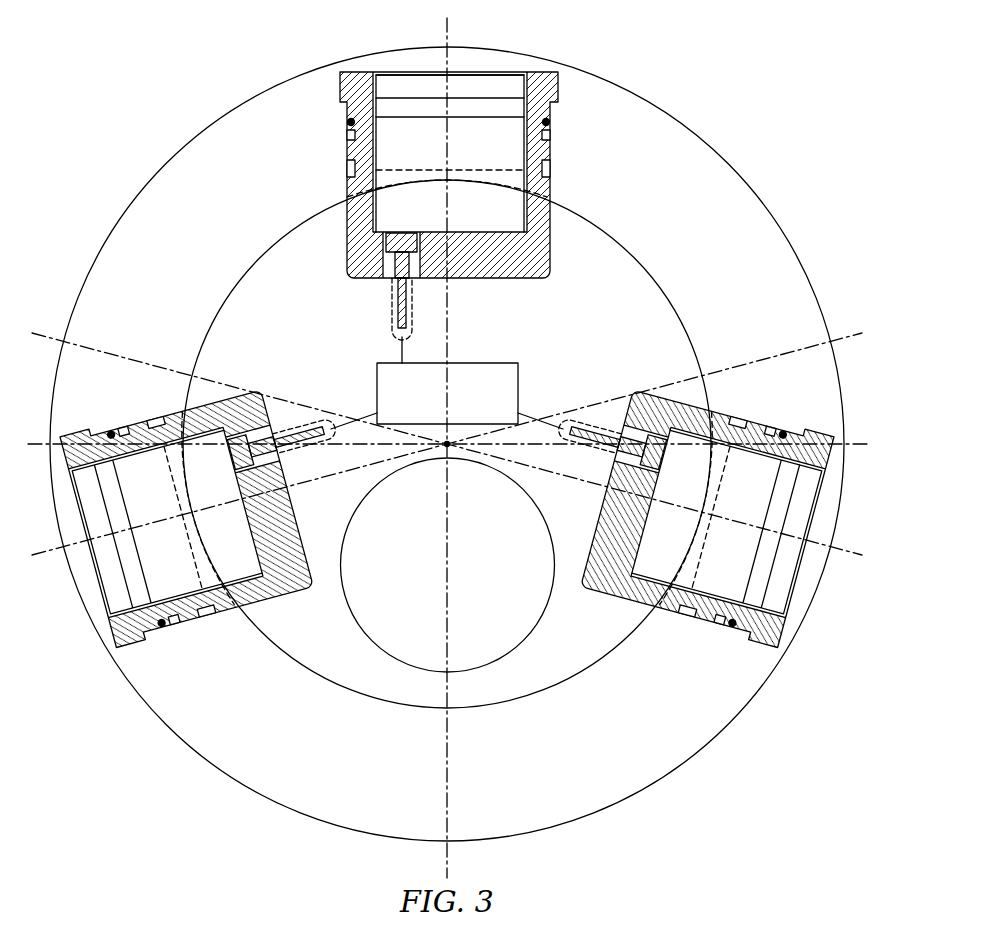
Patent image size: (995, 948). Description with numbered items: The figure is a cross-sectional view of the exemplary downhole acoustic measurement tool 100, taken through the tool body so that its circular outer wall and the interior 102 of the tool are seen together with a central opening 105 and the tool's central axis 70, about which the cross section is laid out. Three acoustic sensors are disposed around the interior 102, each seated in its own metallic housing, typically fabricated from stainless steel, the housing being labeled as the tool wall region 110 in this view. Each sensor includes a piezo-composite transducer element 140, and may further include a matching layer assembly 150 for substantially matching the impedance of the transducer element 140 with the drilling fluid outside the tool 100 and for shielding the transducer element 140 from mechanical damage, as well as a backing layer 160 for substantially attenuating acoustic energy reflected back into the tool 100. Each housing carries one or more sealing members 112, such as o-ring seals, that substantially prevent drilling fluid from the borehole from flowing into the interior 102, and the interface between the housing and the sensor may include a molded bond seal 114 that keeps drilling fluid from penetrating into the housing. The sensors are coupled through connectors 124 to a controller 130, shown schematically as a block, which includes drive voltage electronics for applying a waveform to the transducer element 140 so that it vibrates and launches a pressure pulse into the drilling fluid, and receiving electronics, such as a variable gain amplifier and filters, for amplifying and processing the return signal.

The acoustic measurement tool 100 is at (434, 446).
The housing 110 is at (170, 163).
The interior 102 is at (319, 346).
The central opening 105 is at (534, 626).
The central axis 70 is at (454, 450).
The connector 124 is at (576, 424).
The controller 130 is at (466, 404).
The piezo-composite transducer element 140 is at (486, 105).
The matching layer assembly 150 is at (405, 86).
The backing layer 160 is at (428, 156).
The sealing member 112 is at (112, 430).
The bond seal 114 is at (115, 622).